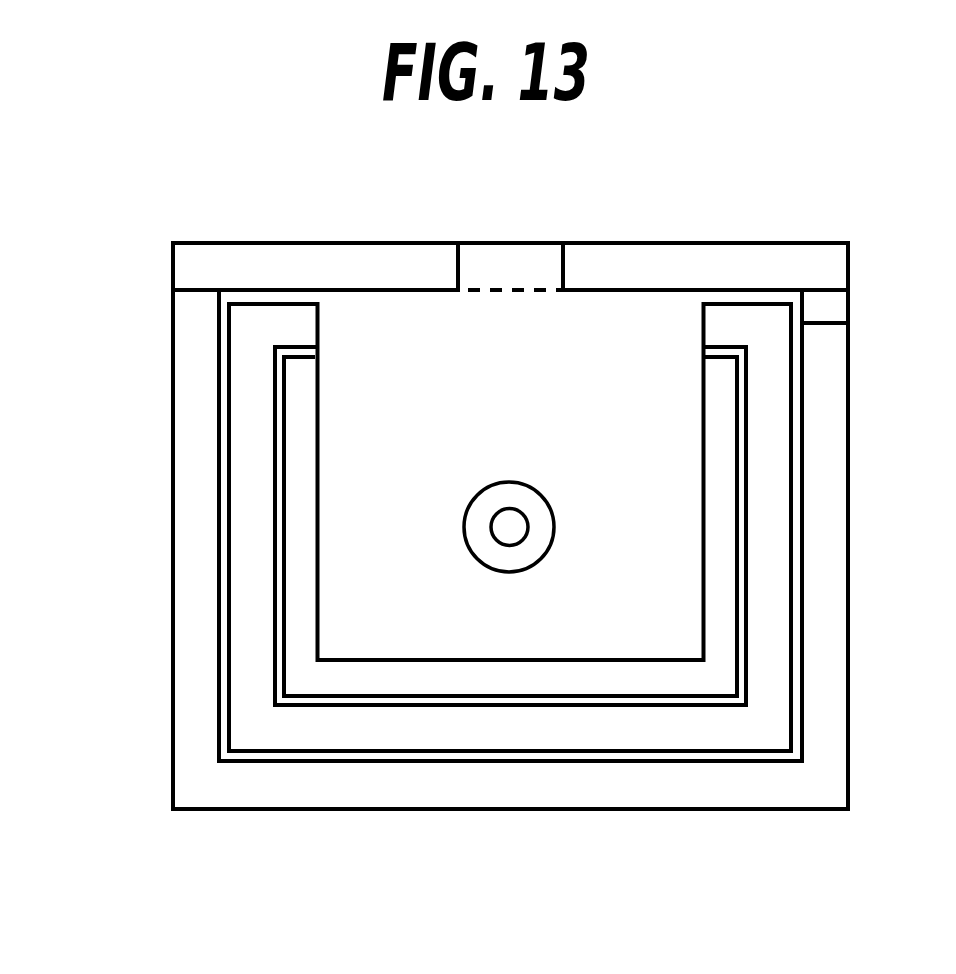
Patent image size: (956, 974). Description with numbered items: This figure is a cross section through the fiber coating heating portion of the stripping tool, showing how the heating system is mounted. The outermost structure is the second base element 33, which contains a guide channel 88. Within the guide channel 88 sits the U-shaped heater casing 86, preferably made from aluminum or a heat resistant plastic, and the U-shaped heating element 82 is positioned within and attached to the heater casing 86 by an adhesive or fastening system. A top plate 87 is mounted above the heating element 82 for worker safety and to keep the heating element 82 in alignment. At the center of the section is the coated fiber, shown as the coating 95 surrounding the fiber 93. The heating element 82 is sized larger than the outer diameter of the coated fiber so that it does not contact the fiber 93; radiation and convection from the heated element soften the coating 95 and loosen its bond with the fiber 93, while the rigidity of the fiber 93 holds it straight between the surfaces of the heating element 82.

The second base element 33 is at (189, 618).
The top plate 87 is at (269, 248).
The heater casing 86 is at (252, 430).
The heating element 82 is at (297, 513).
The guide channel 88 is at (632, 763).
The coating 95 is at (473, 495).
The fiber 93 is at (528, 518).